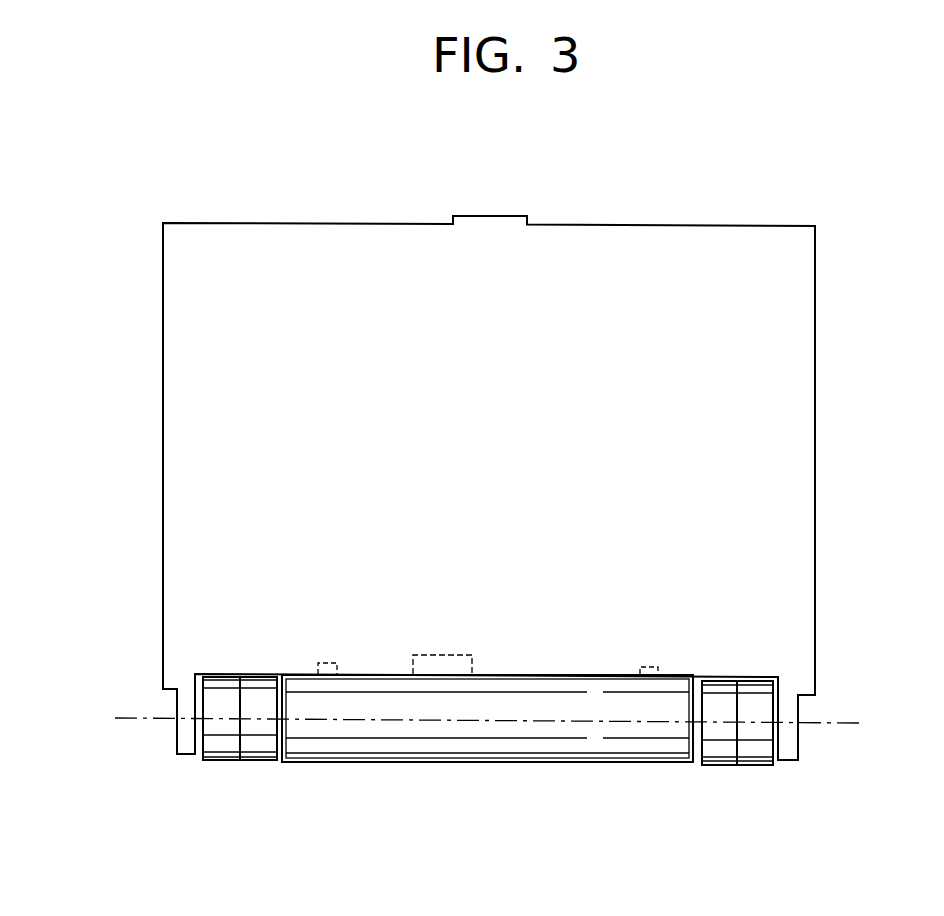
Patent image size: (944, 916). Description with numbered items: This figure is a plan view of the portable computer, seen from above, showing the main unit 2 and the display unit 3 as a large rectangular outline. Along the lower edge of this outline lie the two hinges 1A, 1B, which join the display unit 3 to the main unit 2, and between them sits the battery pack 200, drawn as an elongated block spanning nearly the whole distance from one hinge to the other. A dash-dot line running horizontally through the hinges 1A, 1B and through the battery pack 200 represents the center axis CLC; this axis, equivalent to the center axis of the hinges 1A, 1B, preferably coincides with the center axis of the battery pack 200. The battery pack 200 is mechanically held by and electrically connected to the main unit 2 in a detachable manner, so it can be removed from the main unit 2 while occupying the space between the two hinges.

The main unit 2 is at (160, 552).
The display unit 3 is at (499, 447).
The hinge 1A is at (231, 778).
The hinge 1B is at (729, 786).
The battery pack 200 is at (512, 746).
The center axis CLC is at (830, 726).